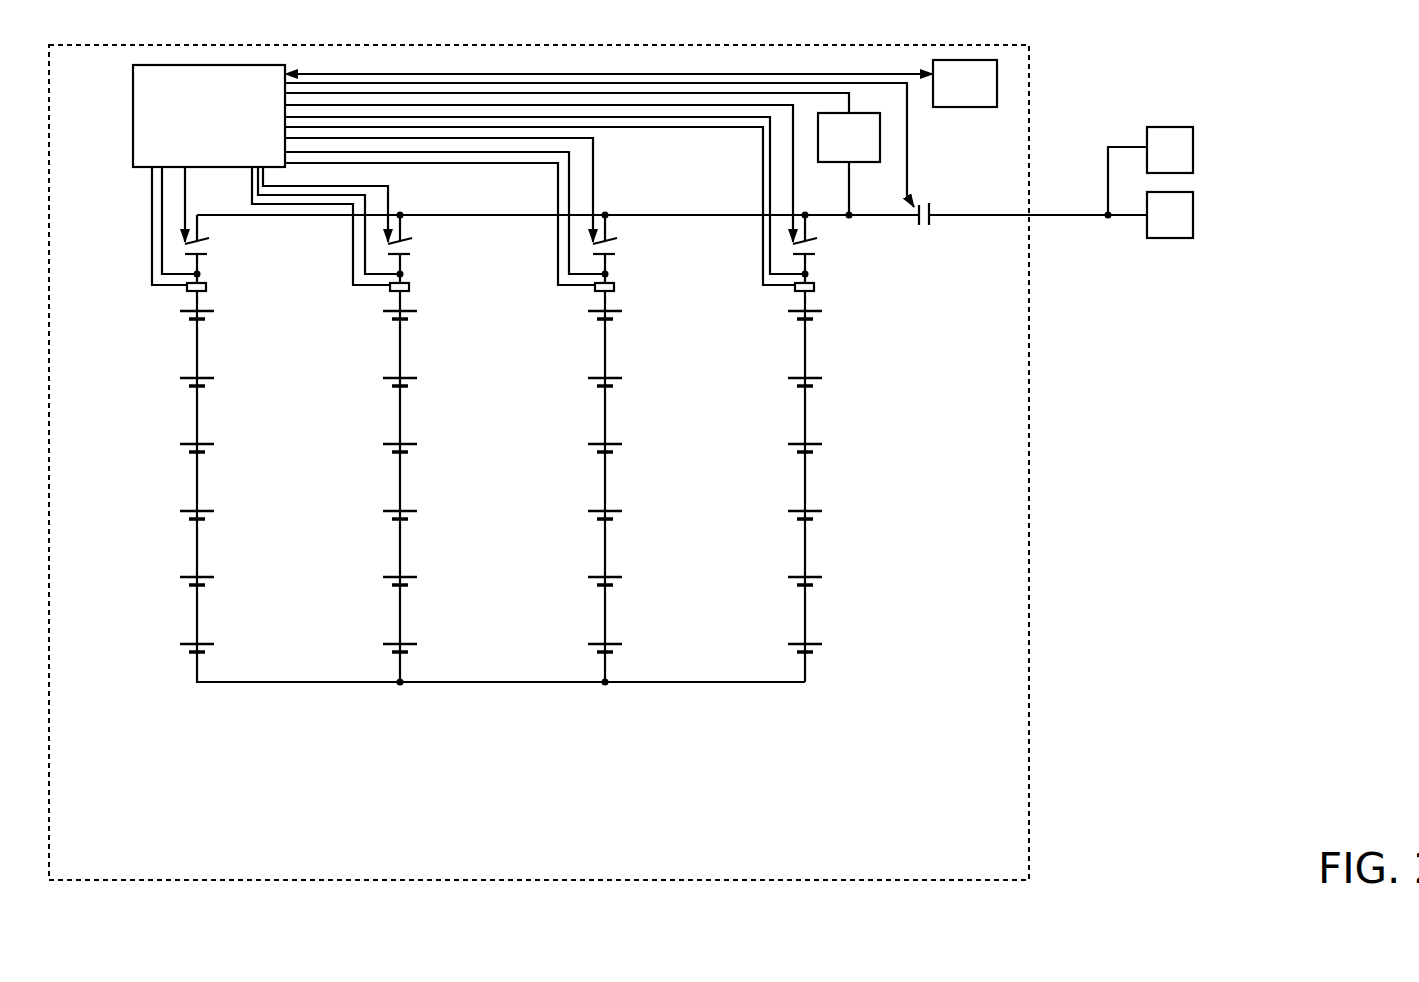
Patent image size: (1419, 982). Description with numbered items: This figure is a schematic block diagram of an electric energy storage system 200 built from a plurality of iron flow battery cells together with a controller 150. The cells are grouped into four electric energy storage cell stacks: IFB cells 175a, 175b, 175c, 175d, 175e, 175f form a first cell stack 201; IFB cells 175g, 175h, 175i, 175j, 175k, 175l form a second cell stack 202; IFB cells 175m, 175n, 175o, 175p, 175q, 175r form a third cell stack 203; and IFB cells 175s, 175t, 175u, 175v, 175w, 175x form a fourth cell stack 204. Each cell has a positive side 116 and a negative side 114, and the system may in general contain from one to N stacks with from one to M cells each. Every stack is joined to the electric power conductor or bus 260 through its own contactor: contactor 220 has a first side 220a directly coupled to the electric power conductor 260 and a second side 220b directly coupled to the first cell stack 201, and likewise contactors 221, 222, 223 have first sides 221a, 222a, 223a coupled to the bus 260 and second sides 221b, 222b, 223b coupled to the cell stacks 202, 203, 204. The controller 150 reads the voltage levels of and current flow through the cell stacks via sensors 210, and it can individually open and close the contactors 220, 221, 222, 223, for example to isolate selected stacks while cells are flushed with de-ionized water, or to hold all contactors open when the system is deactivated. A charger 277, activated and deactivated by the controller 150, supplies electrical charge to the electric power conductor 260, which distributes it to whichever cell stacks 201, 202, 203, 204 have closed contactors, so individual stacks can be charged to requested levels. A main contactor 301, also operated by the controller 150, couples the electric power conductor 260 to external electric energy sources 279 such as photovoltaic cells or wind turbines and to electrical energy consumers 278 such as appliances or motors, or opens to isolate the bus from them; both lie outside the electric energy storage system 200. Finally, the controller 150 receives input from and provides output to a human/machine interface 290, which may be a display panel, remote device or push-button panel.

The negative side 114 is at (189, 321).
The positive side 116 is at (215, 311).
The controller 150 is at (133, 66).
The IFB cell 175a is at (178, 300).
The IFB cell 175b is at (178, 367).
The IFB cell 175c is at (178, 433).
The IFB cell 175d is at (178, 500).
The IFB cell 175e is at (178, 566).
The IFB cell 175f is at (178, 633).
The IFB cell 175g is at (381, 300).
The IFB cell 175h is at (381, 367).
The IFB cell 175i is at (381, 433).
The IFB cell 175j is at (381, 500).
The IFB cell 175k is at (381, 566).
The IFB cell 175l is at (381, 633).
The IFB cell 175m is at (586, 300).
The IFB cell 175n is at (586, 367).
The IFB cell 175o is at (586, 433).
The IFB cell 175p is at (586, 500).
The IFB cell 175q is at (586, 566).
The IFB cell 175r is at (586, 633).
The IFB cell 175s is at (786, 300).
The IFB cell 175t is at (786, 367).
The IFB cell 175u is at (786, 433).
The IFB cell 175v is at (786, 500).
The IFB cell 175w is at (786, 566).
The IFB cell 175x is at (786, 633).
The electric energy storage system 200 is at (1028, 528).
The first cell stack 201 is at (180, 694).
The second cell stack 202 is at (406, 698).
The third cell stack 203 is at (611, 697).
The fourth cell stack 204 is at (826, 690).
The sensor 210 is at (206, 285).
The contactor 220 is at (239, 241).
The first side 220a is at (218, 232).
The second side 220b is at (205, 254).
The contactor 221 is at (442, 241).
The first side 221a is at (421, 232).
The second side 221b is at (408, 254).
The contactor 222 is at (647, 241).
The first side 222a is at (626, 232).
The second side 222b is at (613, 254).
The contactor 223 is at (847, 241).
The first side 223a is at (826, 232).
The second side 223b is at (813, 254).
The electric power conductor 260 is at (479, 215).
The charger 277 is at (849, 166).
The electrical energy consumers 278 is at (1170, 215).
The external electric energy sources 279 is at (1150, 171).
The human/machine interface 290 is at (965, 83).
The main contactor 301 is at (938, 224).